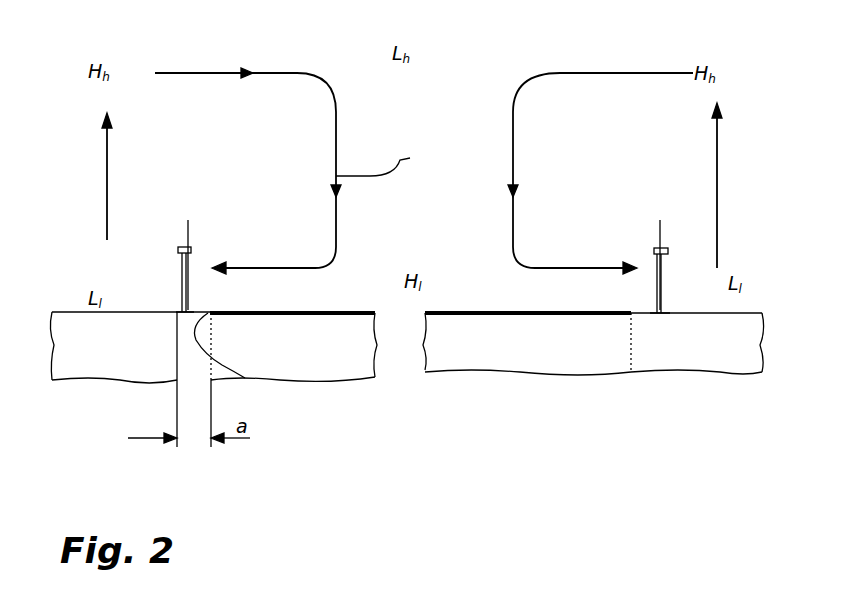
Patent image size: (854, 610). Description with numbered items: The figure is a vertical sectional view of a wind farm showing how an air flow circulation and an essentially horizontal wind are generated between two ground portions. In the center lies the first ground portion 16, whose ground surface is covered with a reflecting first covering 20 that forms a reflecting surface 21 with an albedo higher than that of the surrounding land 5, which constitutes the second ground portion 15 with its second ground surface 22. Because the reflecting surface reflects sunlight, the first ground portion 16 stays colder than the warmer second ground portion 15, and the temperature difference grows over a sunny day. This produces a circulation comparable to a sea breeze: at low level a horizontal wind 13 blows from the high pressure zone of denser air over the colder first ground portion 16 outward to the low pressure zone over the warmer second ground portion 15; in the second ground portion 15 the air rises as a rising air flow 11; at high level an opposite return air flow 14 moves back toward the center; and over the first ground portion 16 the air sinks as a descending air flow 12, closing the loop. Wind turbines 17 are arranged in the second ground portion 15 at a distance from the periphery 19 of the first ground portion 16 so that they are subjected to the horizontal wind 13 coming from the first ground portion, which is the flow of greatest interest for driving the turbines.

The land 5 is at (652, 362).
The rising air flow 11 is at (107, 180).
The descending air flow 12 is at (513, 176).
The horizontal wind 13 is at (260, 268).
The return air flow 14 is at (258, 73).
The second ground portion 15 is at (96, 350).
The first ground portion 16 is at (568, 368).
The wind turbines 17 is at (177, 305).
The periphery 19 is at (220, 370).
The reflecting first covering 20 is at (498, 315).
The reflecting surface 21 is at (334, 313).
The second ground surface 22 is at (736, 313).